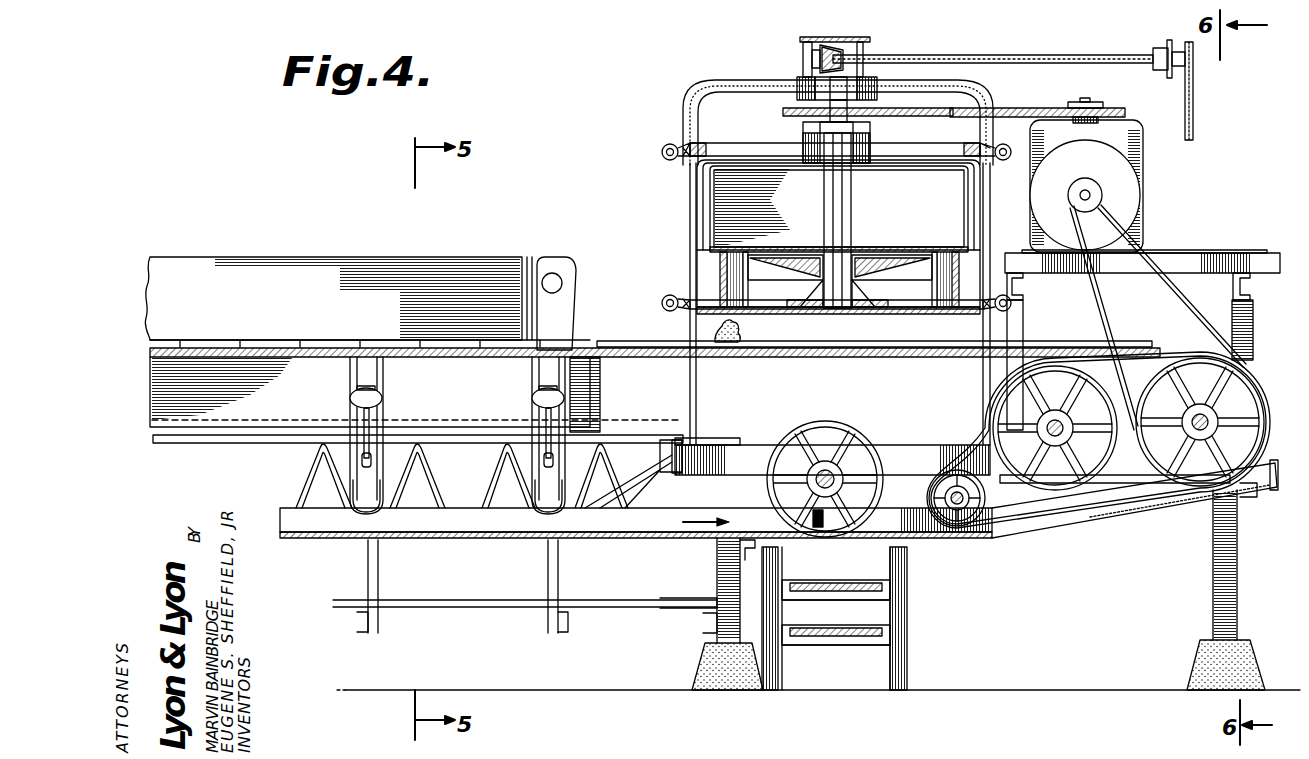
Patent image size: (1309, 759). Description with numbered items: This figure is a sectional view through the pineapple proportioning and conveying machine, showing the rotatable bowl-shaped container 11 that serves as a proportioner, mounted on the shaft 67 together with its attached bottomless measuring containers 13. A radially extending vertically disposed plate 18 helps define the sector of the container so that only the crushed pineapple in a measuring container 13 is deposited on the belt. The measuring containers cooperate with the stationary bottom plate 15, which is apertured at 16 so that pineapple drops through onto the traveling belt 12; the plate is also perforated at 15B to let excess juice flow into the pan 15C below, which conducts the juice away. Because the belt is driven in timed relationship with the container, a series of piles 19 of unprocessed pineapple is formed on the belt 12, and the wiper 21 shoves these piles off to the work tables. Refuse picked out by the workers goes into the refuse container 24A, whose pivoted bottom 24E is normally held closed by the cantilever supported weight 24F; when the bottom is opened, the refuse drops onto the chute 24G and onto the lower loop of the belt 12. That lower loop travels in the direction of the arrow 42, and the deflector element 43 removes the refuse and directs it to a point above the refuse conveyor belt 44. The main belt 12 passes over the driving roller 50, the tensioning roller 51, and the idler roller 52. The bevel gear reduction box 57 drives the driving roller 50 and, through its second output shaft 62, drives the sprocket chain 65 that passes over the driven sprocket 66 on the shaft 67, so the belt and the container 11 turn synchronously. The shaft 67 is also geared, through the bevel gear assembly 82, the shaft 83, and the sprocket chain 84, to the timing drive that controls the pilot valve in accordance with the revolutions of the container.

The rotatable bowl-shaped container 11 is at (980, 195).
The traveling belt 12 is at (797, 357).
The measuring container 13 is at (705, 265).
The stationary bottom plate 15 is at (945, 313).
The perforations 15B is at (887, 324).
The pan 15C is at (807, 310).
The aperture 16 is at (722, 307).
The radially extending vertically disposed plate 18 is at (818, 197).
The piles of unprocessed pineapple 19 is at (738, 333).
The wiper 21 is at (284, 263).
The refuse container 24A is at (383, 380).
The pivoted bottom 24E is at (382, 400).
The cantilever supported weight 24F is at (362, 461).
The chute 24G is at (366, 500).
The arrow 42 is at (703, 527).
The deflector element 43 is at (823, 515).
The refuse conveyor belt 44 is at (832, 583).
The driving roller 50 is at (1222, 385).
The tensioning roller 51 is at (1080, 480).
The idler roller 52 is at (962, 526).
The bevel gear reduction box 57 is at (1135, 150).
The second output shaft 62 is at (1090, 102).
The sprocket chain 65 is at (1028, 108).
The driven sprocket 66 is at (783, 114).
The shaft 67 is at (838, 190).
The bevel gear assembly 82 is at (843, 58).
The shaft 83 is at (1004, 52).
The sprocket chain 84 is at (1193, 88).